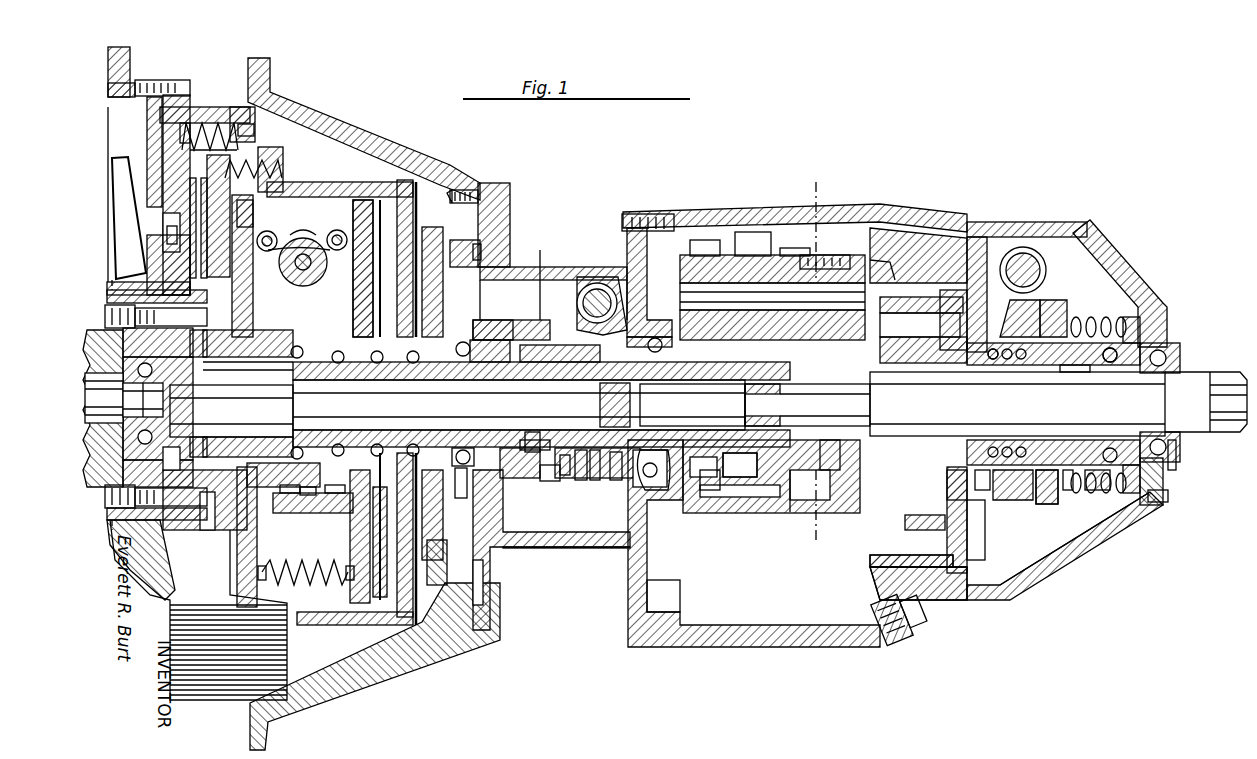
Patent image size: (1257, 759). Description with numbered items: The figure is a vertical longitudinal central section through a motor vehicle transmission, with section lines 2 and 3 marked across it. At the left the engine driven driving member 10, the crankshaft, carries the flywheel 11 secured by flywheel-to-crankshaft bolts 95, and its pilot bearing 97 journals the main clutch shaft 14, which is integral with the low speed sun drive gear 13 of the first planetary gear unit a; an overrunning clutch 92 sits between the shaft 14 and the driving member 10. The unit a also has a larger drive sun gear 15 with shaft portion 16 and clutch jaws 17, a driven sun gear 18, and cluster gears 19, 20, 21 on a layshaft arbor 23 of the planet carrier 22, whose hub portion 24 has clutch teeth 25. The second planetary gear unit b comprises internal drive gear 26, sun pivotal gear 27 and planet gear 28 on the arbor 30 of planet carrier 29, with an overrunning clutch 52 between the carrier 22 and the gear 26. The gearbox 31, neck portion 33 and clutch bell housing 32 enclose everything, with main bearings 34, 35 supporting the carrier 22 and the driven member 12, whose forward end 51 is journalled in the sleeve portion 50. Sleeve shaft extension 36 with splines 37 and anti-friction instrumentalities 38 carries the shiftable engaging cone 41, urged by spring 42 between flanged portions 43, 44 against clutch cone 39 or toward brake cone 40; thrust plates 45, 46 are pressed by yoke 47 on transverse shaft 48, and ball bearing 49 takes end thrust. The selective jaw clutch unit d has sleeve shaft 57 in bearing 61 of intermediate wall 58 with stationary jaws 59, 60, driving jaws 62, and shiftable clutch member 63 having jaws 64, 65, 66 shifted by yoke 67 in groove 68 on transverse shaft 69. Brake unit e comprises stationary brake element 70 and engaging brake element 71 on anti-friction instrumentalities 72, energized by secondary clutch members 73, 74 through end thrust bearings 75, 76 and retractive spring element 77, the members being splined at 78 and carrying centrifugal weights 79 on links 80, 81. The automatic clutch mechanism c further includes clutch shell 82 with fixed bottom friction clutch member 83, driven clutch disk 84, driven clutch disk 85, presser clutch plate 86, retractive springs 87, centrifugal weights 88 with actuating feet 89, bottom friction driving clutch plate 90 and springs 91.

The section line 2- 2 is at (101, 335).
The section line 3- 3 is at (798, 191).
The driving member 10 is at (138, 407).
The engine flywheel 11 is at (142, 80).
The driven member 12 is at (1215, 424).
The low speed sun drive gear 13 is at (740, 465).
The main clutch shaft 14 is at (519, 405).
The larger drive sun gear 15 is at (710, 490).
The shaft portion 16 is at (692, 405).
The clutch jaws 17 is at (565, 475).
The driven sun gear 18 is at (805, 510).
The first cluster gear 19 is at (703, 240).
The second cluster gear 20 is at (745, 235).
The third cluster gear 21 is at (768, 255).
The planet carrier 22 is at (672, 280).
The layshaft arbor 23 is at (772, 297).
The hub portion 24 is at (617, 405).
The clutch teeth 25 is at (616, 481).
The internal drive gear 26 is at (985, 535).
The sun pivotal gear 27 is at (967, 505).
The planet gear 28 is at (955, 304).
The planet carrier 29 is at (935, 528).
The arbor 30 is at (920, 324).
The gearbox 31 is at (958, 226).
The clutch bell housing 32 is at (312, 114).
The neck portion 33 is at (558, 540).
The main bearing 34 is at (662, 502).
The main bearing 35 is at (1172, 462).
The sleeve shaft extension 36 is at (1075, 368).
The splines 37 is at (1030, 366).
The anti-friction instrumentalities 38 is at (998, 362).
The clutch cone 39 is at (935, 559).
The brake cone 40 is at (935, 582).
The shiftable engaging cone 41 is at (900, 573).
The spring 42 is at (1100, 490).
The flanged portion 43 is at (1070, 495).
The flanged portion 44 is at (1160, 500).
The thrust plate 45 is at (1046, 505).
The engaging mate thrust plate 46 is at (985, 495).
The bifurcated yoke 47 is at (1040, 300).
The transverse shaft 48 is at (1046, 268).
The ball bearing 49 is at (1112, 363).
The sleeve portion 50 is at (807, 405).
The forward end 51 is at (810, 400).
The overrunning clutch 52 is at (828, 472).
The sleeve shaft 57 is at (495, 370).
The intermediate wall 58 is at (498, 522).
The reverse selectable jaws 59 is at (474, 460).
The permanent positive gear drive clutch jaws 60 is at (548, 484).
The anti-friction bearing 61 is at (460, 480).
The clutch jaws 62 is at (537, 444).
The shiftable clutch member 63 is at (560, 356).
The clutch jaws 64 is at (512, 404).
The clutch jaws 65 is at (581, 482).
The clutch jaws 66 is at (512, 330).
The bifurcated yoke 67 is at (578, 335).
The groove 68 is at (596, 482).
The transverse shaft 69 is at (597, 290).
The stationary brake element 70 is at (447, 590).
The engaging brake element 71 is at (474, 562).
The anti-friction instrumentalities 72 is at (325, 345).
The secondary driven clutch member 73 is at (254, 214).
The secondary driven clutch member 74 is at (356, 206).
The end thrust bearing 75 is at (290, 513).
The end thrust bearing 76 is at (335, 513).
The retractive spring element 77 is at (320, 585).
The splines 78 is at (308, 513).
The centrifugal weights 79 is at (318, 274).
The link 80 is at (276, 236).
The link 81 is at (330, 235).
The clutch shell 82 is at (284, 160).
The fixed bottom friction clutch member 83 is at (414, 200).
The driven clutch disk 84 is at (387, 603).
The driven clutch disk 85 is at (196, 258).
The presser clutch plate 86 is at (180, 130).
The retractive springs 87 is at (254, 130).
The centrifugal weights 88 is at (129, 218).
The actuating feet 89 is at (167, 235).
The bottom friction driving clutch plate 90 is at (200, 152).
The springs 91 is at (283, 170).
The overrunning clutch 92 is at (180, 465).
The flywheel-to-crankshaft bolts 95 is at (156, 405).
The clutch pilot bearing 97 is at (124, 402).
The first planetary gear unit a is at (765, 240).
The second planetary gear unit b is at (888, 270).
The speed responsive automatic clutch mechanism c is at (205, 120).
The selective jaw clutch intermediary drive coupling unit d is at (540, 305).
The brake unit e is at (482, 186).